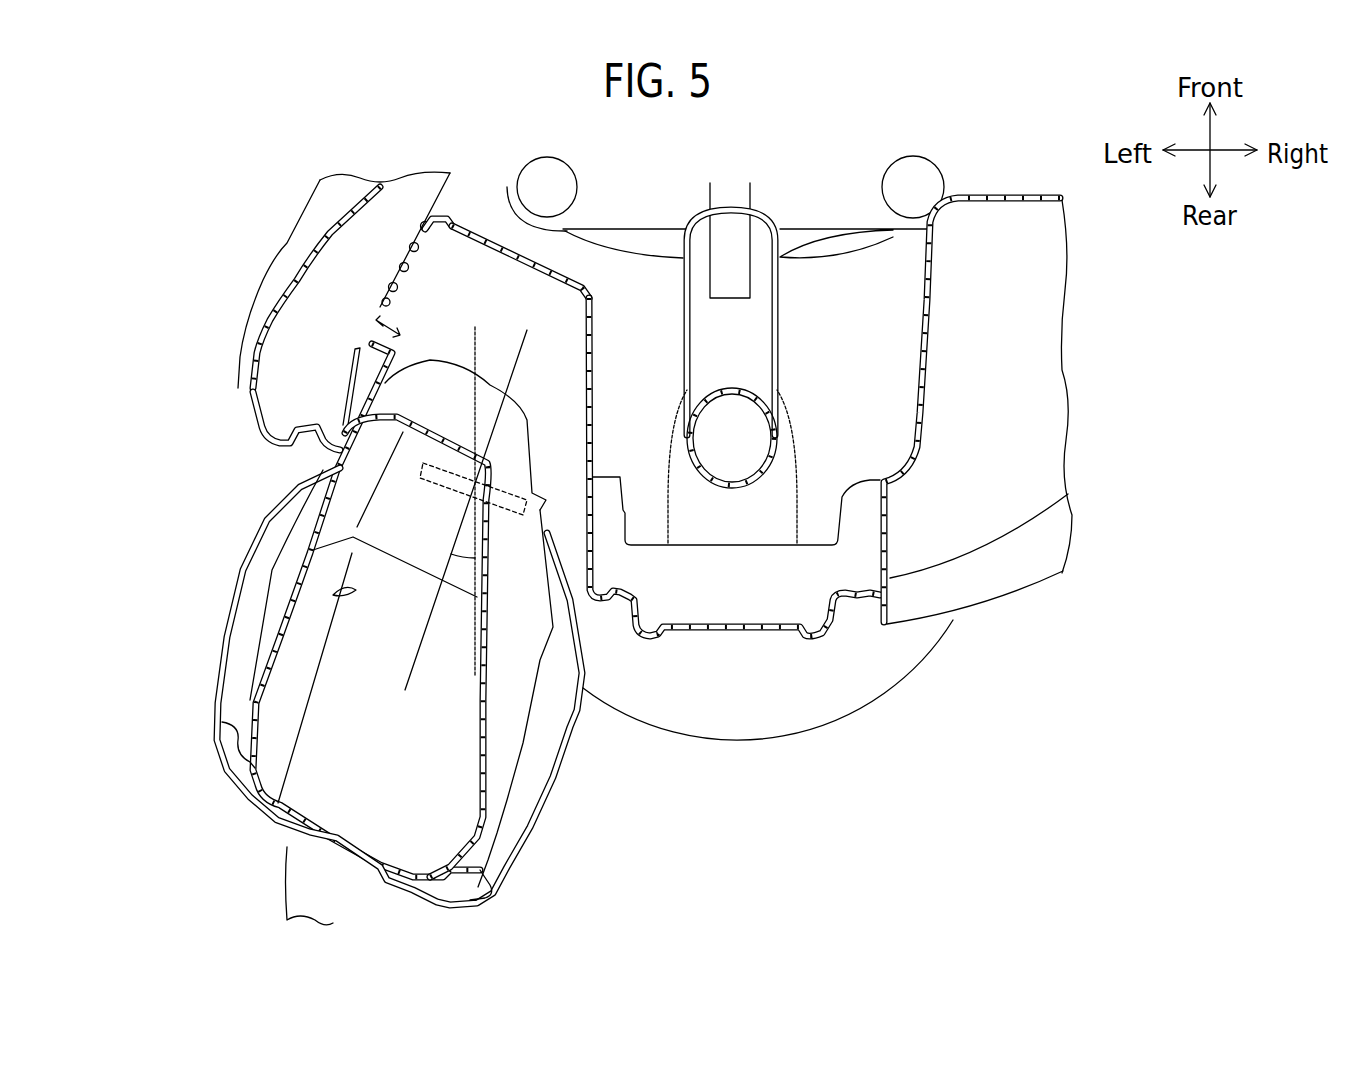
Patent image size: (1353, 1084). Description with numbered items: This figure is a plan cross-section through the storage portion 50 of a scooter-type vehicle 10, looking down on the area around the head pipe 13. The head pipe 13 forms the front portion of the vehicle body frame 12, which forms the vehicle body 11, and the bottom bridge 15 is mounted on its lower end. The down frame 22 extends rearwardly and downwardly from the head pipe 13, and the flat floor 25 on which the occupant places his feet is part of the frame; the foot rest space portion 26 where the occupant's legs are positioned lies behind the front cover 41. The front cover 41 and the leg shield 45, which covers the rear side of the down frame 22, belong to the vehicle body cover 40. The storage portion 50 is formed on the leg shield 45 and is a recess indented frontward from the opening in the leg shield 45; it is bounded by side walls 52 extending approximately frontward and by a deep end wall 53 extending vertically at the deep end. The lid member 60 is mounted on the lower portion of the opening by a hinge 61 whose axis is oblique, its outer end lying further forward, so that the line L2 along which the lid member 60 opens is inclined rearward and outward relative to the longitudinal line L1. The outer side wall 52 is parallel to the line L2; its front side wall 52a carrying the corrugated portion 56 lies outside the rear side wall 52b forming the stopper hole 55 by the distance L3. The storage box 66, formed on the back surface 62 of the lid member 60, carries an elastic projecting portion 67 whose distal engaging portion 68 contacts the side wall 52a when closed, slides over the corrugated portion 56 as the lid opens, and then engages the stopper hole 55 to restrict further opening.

The vehicle 10 is at (181, 163).
The vehicle body 11 is at (782, 284).
The vehicle body frame 12 is at (800, 417).
The head pipe 13 is at (780, 320).
The bottom bridge 15 is at (910, 230).
The down frame 22 is at (885, 508).
The flat floor 25 is at (318, 907).
The foot rest space portion 26 is at (753, 810).
The vehicle body cover 40 is at (262, 250).
The front cover 41 is at (252, 293).
The leg shield 45 is at (272, 440).
The storage portion 50 is at (540, 385).
The side wall 52 is at (478, 234).
The side wall (front portion) 52a is at (435, 255).
The side wall (rear portion) 52b is at (328, 478).
The deep end wall 53 is at (585, 355).
The stopper hole 55 is at (338, 240).
The corrugated portion 56 is at (417, 262).
The lid member 60 is at (547, 792).
The hinge 61 is at (440, 482).
The back surface 62 is at (502, 833).
The storage box 66 is at (350, 590).
The projecting portion 67 is at (393, 390).
The engaging portion 68 is at (366, 345).
The line L1 is at (476, 637).
The line L2 is at (417, 662).
The distance L3 is at (380, 326).